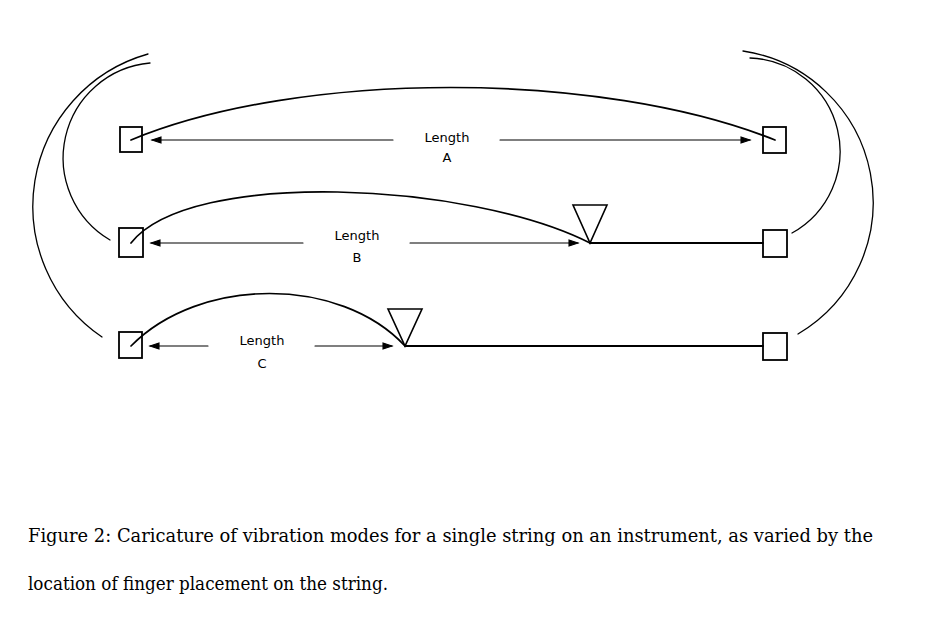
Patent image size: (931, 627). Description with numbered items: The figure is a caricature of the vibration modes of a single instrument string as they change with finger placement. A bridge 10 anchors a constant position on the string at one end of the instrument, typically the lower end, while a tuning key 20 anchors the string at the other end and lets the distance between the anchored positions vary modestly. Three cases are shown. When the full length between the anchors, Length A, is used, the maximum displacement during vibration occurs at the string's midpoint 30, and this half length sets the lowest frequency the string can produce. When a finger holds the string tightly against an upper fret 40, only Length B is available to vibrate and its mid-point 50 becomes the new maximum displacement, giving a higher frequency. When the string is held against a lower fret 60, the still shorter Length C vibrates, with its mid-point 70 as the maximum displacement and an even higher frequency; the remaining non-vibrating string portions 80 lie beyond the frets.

The bridge 10 is at (113, 123).
The tuning key 20 is at (780, 125).
The midpoint of Length A 30 is at (455, 78).
The upper fret 40 is at (590, 193).
The mid-point of Length B 50 is at (362, 182).
The lower fret 60 is at (433, 310).
The mid-point of Length C 70 is at (267, 282).
The non-vibrating portion of string 80 is at (719, 333).